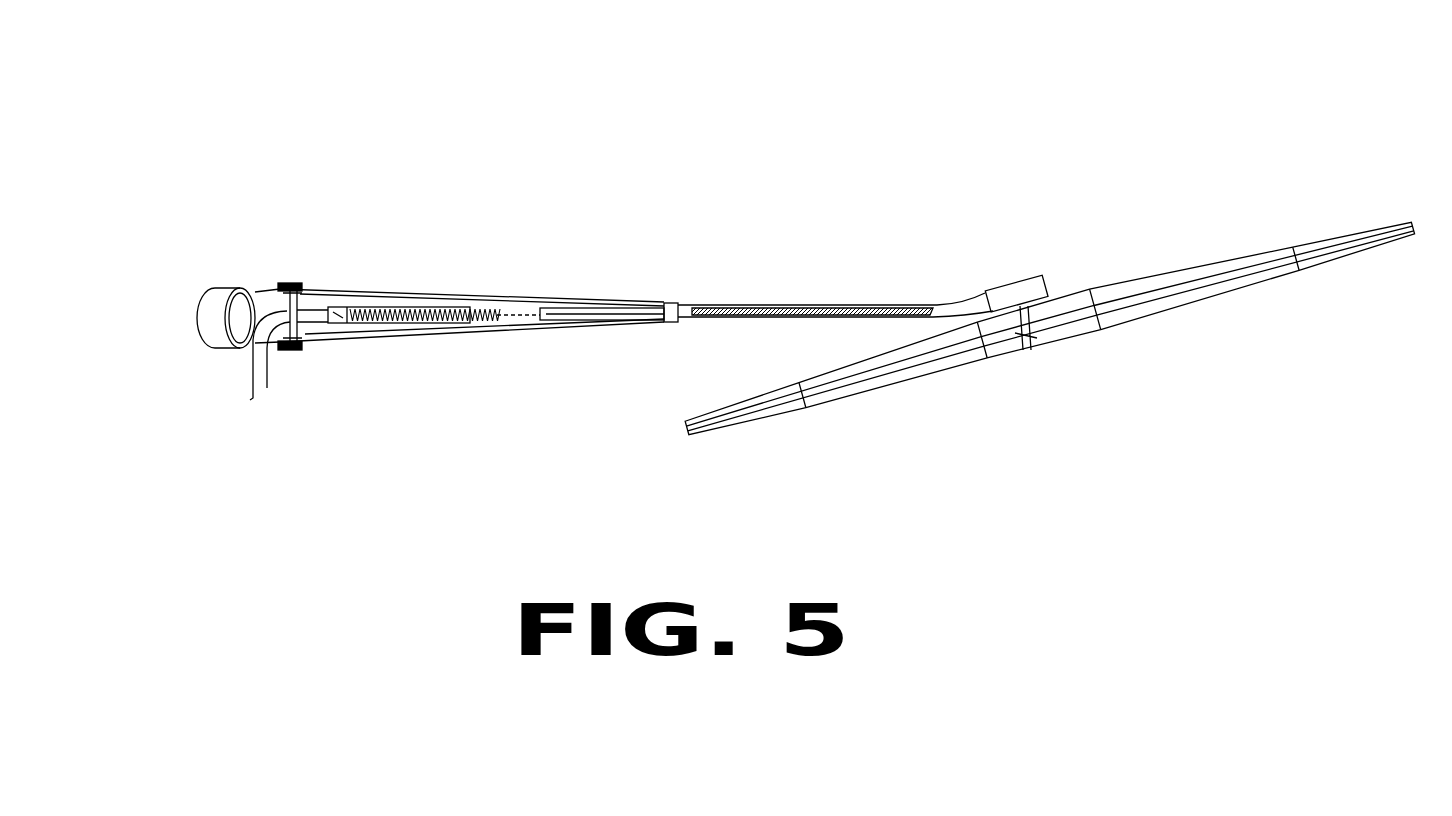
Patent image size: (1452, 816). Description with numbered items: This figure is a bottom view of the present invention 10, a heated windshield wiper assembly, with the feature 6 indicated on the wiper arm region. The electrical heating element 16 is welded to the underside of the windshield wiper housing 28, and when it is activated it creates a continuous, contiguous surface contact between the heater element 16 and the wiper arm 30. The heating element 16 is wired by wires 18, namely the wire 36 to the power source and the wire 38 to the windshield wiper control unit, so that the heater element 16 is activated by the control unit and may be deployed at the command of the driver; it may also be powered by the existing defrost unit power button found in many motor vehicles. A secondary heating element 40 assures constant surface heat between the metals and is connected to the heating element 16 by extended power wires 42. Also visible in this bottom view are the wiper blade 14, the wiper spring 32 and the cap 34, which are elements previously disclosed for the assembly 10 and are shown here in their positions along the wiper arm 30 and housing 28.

The present invention 10 is at (1012, 183).
The wiper blade 14 is at (1002, 352).
The electrical heating element 16 is at (338, 310).
The wires 18 is at (255, 400).
The windshield wiper housing 28 is at (383, 334).
The wiper arm 30 is at (788, 305).
The wiper spring 32 is at (362, 322).
The cap 34 is at (198, 306).
The wire to the power source 36 is at (257, 348).
The wire to the wiper control unit 38 is at (266, 379).
The secondary heating element 40 is at (790, 321).
The extended power wires 42 is at (583, 310).
The arm cover 6 is at (442, 297).